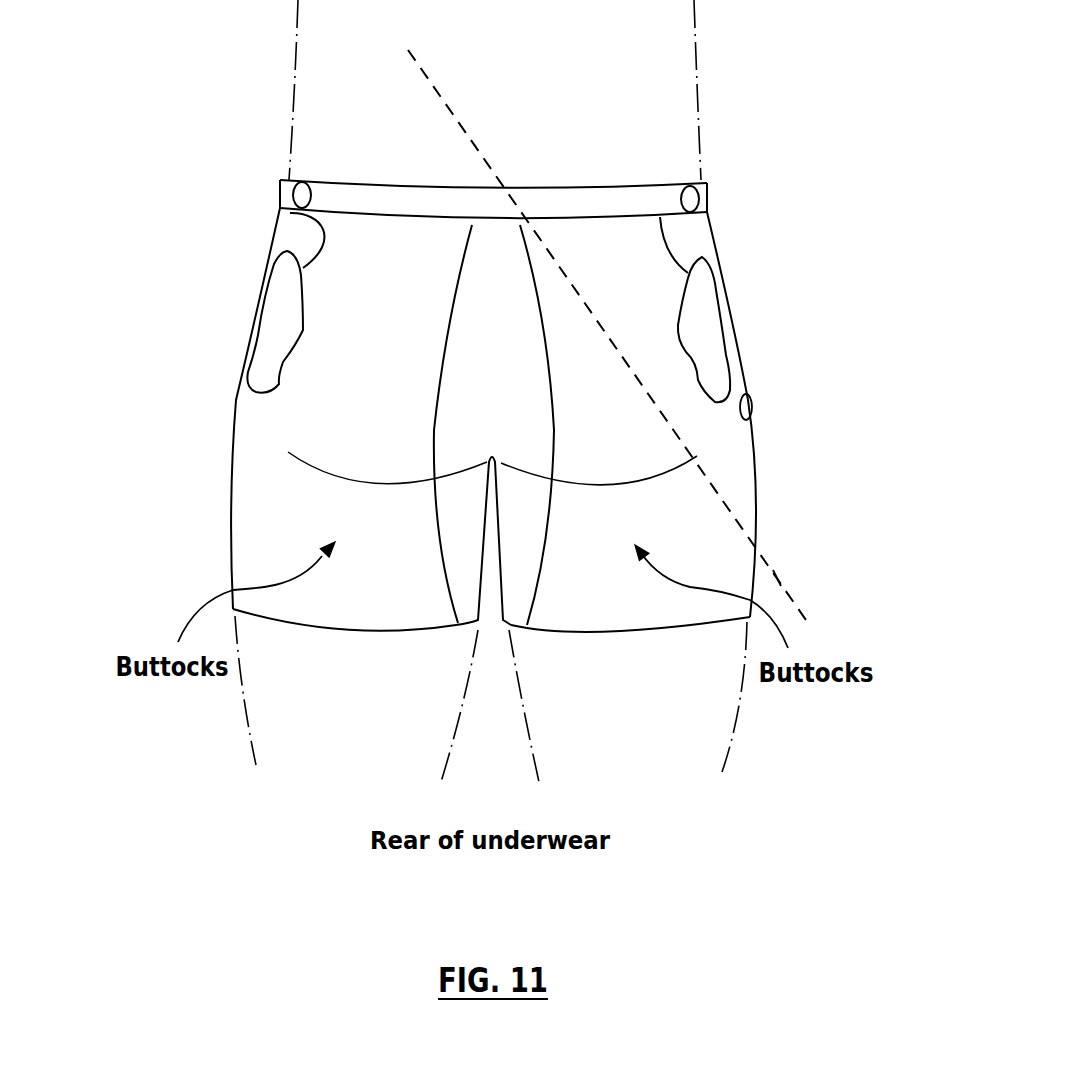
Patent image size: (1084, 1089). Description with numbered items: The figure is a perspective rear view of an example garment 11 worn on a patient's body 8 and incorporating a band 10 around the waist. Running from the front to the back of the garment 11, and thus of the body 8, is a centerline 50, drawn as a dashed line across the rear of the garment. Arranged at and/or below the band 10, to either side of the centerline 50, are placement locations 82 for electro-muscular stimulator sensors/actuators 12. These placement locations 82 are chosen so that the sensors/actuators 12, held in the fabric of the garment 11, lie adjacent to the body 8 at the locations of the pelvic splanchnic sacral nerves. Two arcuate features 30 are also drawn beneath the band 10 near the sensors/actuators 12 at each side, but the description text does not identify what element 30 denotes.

The patient's body 8 is at (512, 82).
The band 10 is at (698, 200).
The garment 11 is at (737, 318).
The electro-muscular stimulator sensors/actuators 12 is at (296, 197).
The opening 30 is at (325, 246).
The centerline 50 is at (777, 578).
The placement locations 82 is at (316, 170).